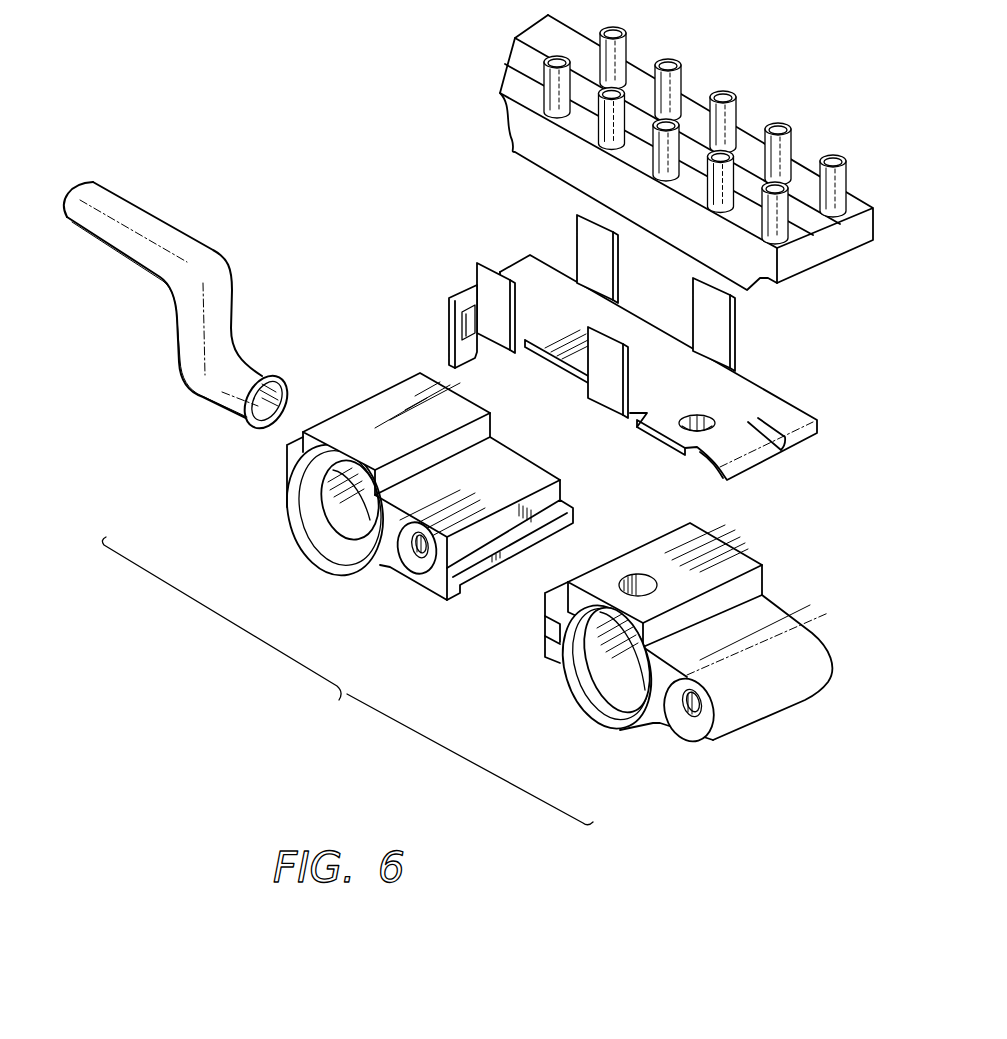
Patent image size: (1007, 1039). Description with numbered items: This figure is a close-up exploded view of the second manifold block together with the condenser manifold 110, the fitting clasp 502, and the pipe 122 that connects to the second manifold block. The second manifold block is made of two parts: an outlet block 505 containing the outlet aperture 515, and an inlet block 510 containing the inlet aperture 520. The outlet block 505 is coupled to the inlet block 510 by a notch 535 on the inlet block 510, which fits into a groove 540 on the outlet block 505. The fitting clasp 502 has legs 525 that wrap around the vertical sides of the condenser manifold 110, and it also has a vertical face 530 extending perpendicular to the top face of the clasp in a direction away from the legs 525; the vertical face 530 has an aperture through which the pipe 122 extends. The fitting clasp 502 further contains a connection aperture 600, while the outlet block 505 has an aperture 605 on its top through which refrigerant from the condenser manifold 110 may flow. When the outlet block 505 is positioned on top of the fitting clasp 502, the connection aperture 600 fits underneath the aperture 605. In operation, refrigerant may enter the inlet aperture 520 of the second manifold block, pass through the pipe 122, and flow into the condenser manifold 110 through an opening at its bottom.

The pipe 122 is at (127, 213).
The condenser manifold 110 is at (817, 250).
The vertical face 530 is at (448, 327).
The legs 525 is at (500, 321).
The connection aperture 600 is at (704, 414).
The fitting clasp 502 is at (667, 353).
The notch 535 is at (562, 498).
The inlet aperture 520 is at (352, 498).
The inlet block 510 is at (465, 510).
The aperture 605 is at (637, 576).
The groove 540 is at (545, 625).
The outlet aperture 515 is at (633, 665).
The outlet block 505 is at (668, 660).